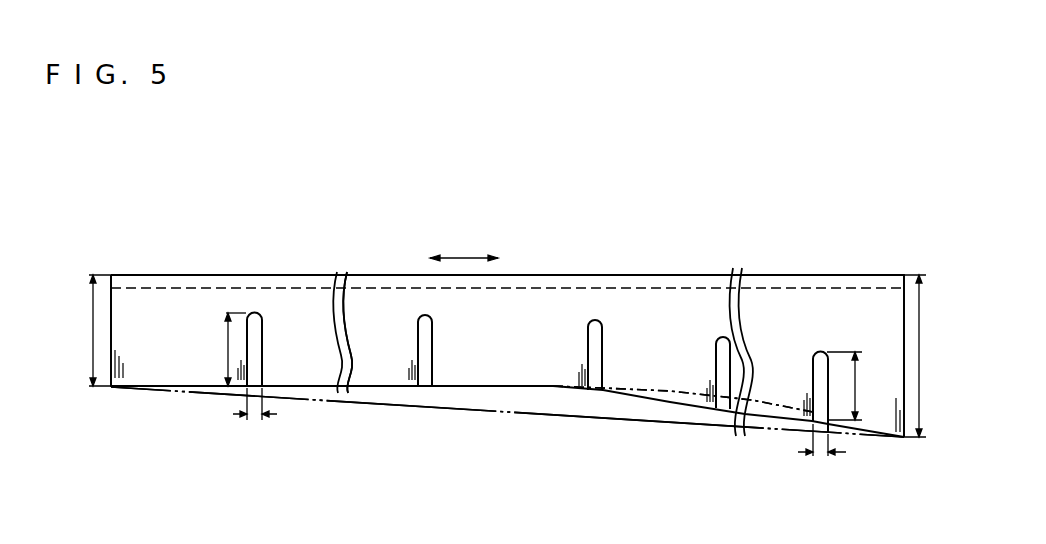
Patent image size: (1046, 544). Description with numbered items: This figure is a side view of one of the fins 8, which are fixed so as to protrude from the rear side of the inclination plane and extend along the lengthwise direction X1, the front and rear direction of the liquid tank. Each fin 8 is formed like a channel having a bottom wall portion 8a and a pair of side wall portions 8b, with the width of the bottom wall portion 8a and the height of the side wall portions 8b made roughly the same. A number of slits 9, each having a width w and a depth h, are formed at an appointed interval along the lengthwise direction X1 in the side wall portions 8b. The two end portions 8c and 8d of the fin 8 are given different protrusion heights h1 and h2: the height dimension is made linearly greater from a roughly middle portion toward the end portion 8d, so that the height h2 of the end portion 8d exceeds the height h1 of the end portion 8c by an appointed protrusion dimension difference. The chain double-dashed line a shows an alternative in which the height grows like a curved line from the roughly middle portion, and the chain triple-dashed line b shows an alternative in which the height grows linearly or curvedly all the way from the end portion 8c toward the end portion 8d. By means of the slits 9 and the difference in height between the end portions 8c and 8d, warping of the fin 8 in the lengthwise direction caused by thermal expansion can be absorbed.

The fin 8 is at (643, 270).
The bottom wall portion 8a is at (375, 288).
The side wall portion 8b is at (543, 307).
The end portion 8c is at (123, 297).
The end portion 8d is at (884, 298).
The slit 9 is at (259, 321).
The chain double-dashed line a is at (647, 392).
The chain triple-dashed line b is at (500, 413).
The depth of slit h is at (226, 347).
The height dimension of end portion 8c h1 is at (93, 356).
The height dimension of end portion 8d h2 is at (919, 412).
The width of slit w is at (253, 416).
The lengthwise direction X1 is at (463, 258).